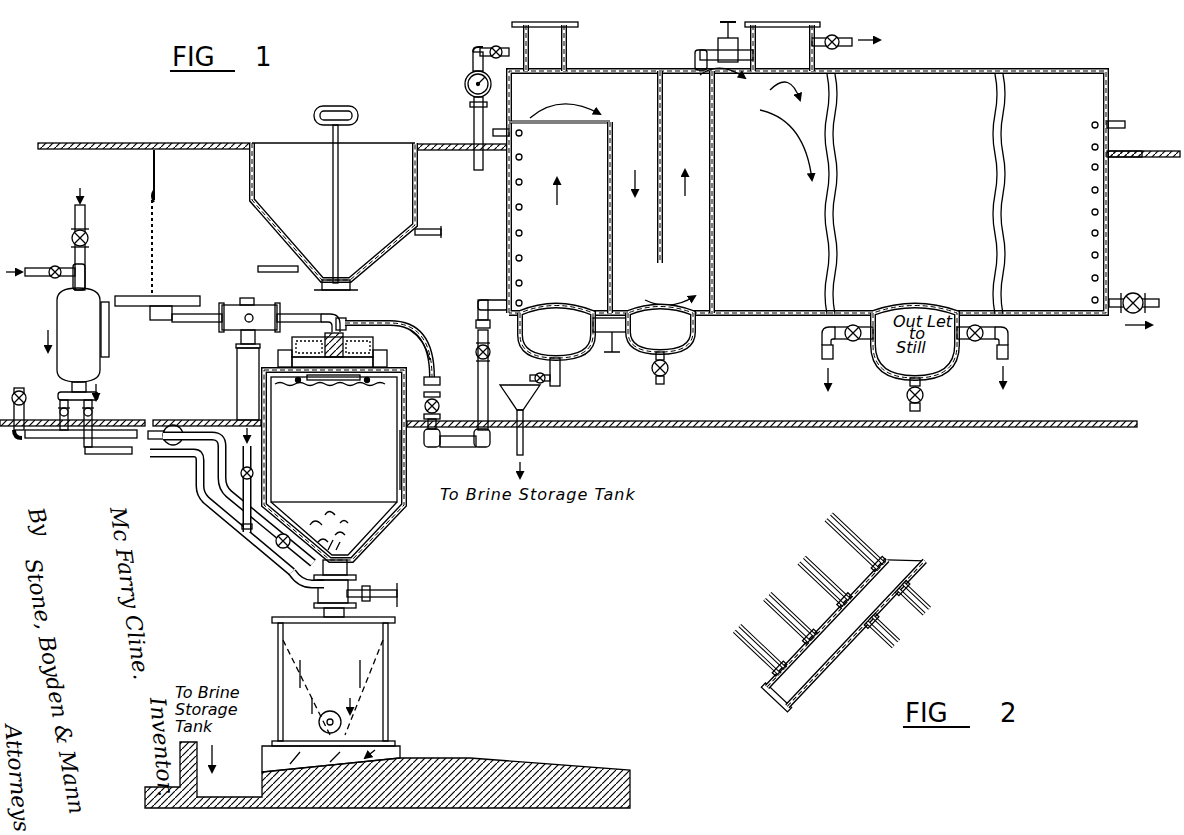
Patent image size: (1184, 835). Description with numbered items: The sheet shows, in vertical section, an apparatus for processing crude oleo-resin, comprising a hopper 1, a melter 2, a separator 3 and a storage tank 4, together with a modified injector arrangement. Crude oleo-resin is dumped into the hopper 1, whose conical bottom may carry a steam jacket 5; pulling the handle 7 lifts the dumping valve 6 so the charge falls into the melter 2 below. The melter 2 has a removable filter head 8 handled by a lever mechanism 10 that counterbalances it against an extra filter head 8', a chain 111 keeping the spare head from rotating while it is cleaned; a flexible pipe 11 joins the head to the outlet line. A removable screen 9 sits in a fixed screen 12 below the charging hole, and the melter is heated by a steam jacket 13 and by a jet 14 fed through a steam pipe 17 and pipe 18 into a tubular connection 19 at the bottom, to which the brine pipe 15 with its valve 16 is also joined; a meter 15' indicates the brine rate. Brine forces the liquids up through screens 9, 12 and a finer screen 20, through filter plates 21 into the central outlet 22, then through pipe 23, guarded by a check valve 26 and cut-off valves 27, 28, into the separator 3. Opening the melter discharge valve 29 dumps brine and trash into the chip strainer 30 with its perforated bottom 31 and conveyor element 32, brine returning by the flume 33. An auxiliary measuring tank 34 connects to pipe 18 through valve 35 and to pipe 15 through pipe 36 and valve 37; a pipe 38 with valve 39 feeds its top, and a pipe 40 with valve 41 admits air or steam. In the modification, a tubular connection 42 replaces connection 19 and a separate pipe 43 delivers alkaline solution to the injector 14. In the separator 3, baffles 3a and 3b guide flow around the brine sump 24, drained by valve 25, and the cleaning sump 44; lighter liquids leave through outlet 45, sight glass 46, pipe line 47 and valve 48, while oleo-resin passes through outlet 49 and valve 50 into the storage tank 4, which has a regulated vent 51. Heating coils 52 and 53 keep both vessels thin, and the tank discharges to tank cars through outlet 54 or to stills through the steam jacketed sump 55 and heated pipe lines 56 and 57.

In FIG. 1, the hopper 1 is at (250, 182).
In FIG. 1, the melter 2 is at (390, 512).
In FIG. 1, the separator 3 is at (632, 82).
In FIG. 1, the baffle 3a is at (608, 178).
In FIG. 1, the baffle 3b is at (664, 140).
In FIG. 1, the storage tank 4 is at (950, 96).
In FIG. 1, the steam jacket 5 is at (428, 237).
In FIG. 1, the dumping valve 6 is at (322, 288).
In FIG. 1, the handle 7 is at (340, 114).
In FIG. 1, the filter head 8 is at (388, 336).
In FIG. 1, the extra filter head 8' is at (161, 235).
In FIG. 1, the removable screen 9 is at (346, 386).
In FIG. 1, the mechanism 10 is at (238, 291).
In FIG. 1, the flexible pipe 11 is at (429, 334).
In FIG. 1, the chain 111 is at (154, 265).
In FIG. 1, the fixed screen 12 is at (282, 387).
In FIG. 1, the steam jacket 13 is at (406, 478).
In FIG. 2, the steam jacket 13 is at (870, 555).
In FIG. 1, the jet 14 is at (292, 580).
In FIG. 2, the jet 14 is at (852, 650).
In FIG. 1, the brine pipe 15 is at (238, 499).
In FIG. 2, the brine pipe 15 is at (822, 567).
In FIG. 1, the meter 15' is at (160, 459).
In FIG. 1, the valve 16 is at (278, 550).
In FIG. 1, the steam pipe 17 is at (240, 504).
In FIG. 1, the pipe 18 is at (244, 540).
In FIG. 2, the pipe 18 is at (752, 672).
In FIG. 1, the tubular connection 19 is at (320, 600).
In FIG. 1, the finer screen 20 is at (424, 380).
In FIG. 1, the filter plates 21 is at (350, 340).
In FIG. 1, the central outlet 22 is at (257, 359).
In FIG. 1, the pipe 23 is at (478, 372).
In FIG. 1, the brine sump 24 is at (574, 355).
In FIG. 1, the valve 25 is at (542, 386).
In FIG. 1, the check valve 26 is at (476, 351).
In FIG. 1, the cut off valve 27 is at (476, 321).
In FIG. 1, the cut off valve 28 is at (446, 404).
In FIG. 1, the melter discharge valve 29 is at (400, 595).
In FIG. 1, the chip strainer 30 is at (388, 652).
In FIG. 1, the perforated metal bottom 31 is at (388, 690).
In FIG. 1, the conveyor element 32 is at (333, 711).
In FIG. 1, the flume 33 is at (262, 770).
In FIG. 1, the auxiliary measuring tank 34 is at (58, 325).
In FIG. 1, the valve 35 is at (93, 405).
In FIG. 1, the pipe 36 is at (60, 440).
In FIG. 1, the valve 37 is at (60, 404).
In FIG. 1, the pipe 38 is at (86, 216).
In FIG. 1, the valve 39 is at (89, 239).
In FIG. 1, the pipe 40 is at (27, 285).
In FIG. 1, the valve 41 is at (52, 266).
In FIG. 2, the tubular connection 42 is at (900, 628).
In FIG. 2, the pipe 43 is at (768, 632).
In FIG. 1, the cleaning sump 44 is at (695, 336).
In FIG. 1, the outlet 45 is at (568, 46).
In FIG. 1, the sight glass 46 is at (465, 87).
In FIG. 1, the pipe line 47 is at (474, 129).
In FIG. 1, the valve 48 is at (494, 47).
In FIG. 1, the outlet 49 is at (704, 58).
In FIG. 1, the valve 50 is at (718, 36).
In FIG. 1, the regulated vent 51 is at (855, 52).
In FIG. 1, the heating coil 52 is at (523, 234).
In FIG. 1, the heating coil 53 is at (1090, 226).
In FIG. 1, the outlet 54 is at (1146, 294).
In FIG. 1, the steam jacketed sump 55 is at (932, 370).
In FIG. 1, the heated pipe line 56 is at (820, 346).
In FIG. 1, the heated pipe line 57 is at (1012, 350).